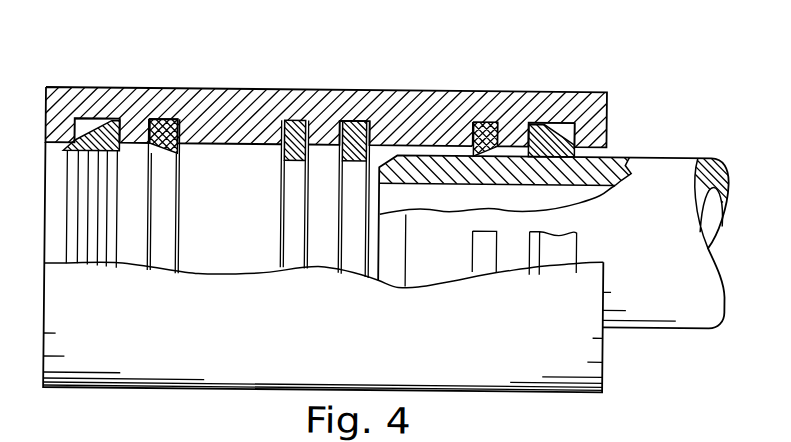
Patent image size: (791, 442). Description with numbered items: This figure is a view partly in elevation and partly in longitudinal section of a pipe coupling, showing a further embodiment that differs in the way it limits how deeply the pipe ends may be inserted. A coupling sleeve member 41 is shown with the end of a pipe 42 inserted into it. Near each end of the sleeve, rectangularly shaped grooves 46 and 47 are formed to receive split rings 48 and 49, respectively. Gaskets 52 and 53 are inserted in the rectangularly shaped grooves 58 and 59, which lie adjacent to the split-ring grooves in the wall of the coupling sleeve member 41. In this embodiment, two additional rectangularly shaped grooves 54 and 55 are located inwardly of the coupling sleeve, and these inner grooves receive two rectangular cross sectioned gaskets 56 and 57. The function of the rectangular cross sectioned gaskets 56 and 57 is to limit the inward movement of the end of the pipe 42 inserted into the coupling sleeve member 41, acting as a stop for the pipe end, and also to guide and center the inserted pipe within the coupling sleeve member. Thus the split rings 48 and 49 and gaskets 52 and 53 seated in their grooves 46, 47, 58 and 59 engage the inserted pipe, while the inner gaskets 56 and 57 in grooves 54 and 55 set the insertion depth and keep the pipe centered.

The coupling sleeve member 41 is at (332, 86).
The pipe 42 is at (666, 166).
The rectangularly shaped groove 46 is at (564, 122).
The rectangularly shaped groove 47 is at (78, 121).
The split ring 48 is at (539, 123).
The split ring 49 is at (100, 125).
The gasket 52 is at (488, 122).
The gasket 53 is at (160, 117).
The rectangularly shaped groove 54 is at (371, 117).
The rectangularly shaped groove 55 is at (283, 117).
The rectangular cross sectioned gasket 56 is at (348, 117).
The rectangular cross sectioned gasket 57 is at (300, 117).
The rectangularly shaped groove 58 is at (476, 118).
The rectangularly shaped groove 59 is at (183, 117).